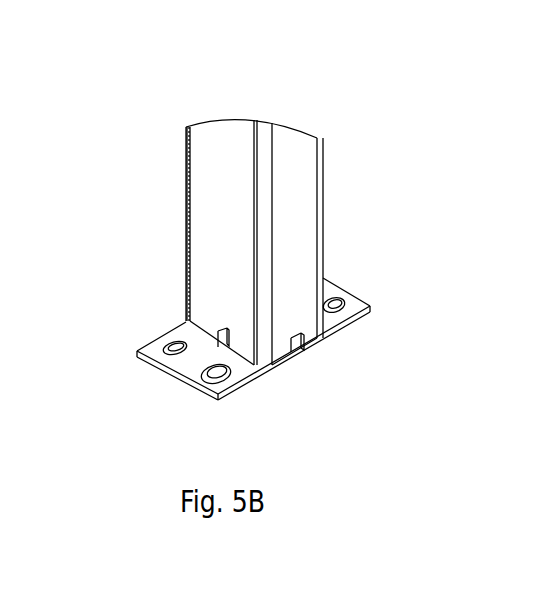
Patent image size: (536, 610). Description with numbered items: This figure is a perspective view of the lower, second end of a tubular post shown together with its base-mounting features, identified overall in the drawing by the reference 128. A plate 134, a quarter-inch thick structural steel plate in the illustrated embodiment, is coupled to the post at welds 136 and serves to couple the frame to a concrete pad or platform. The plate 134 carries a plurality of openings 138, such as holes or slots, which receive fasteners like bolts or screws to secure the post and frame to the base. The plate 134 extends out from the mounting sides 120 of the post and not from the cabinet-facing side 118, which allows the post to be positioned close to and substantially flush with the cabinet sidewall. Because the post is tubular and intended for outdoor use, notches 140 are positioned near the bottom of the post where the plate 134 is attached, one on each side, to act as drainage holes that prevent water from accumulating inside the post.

The base assembly 128 is at (153, 92).
The cabinet-facing side 118 is at (298, 207).
The mounting sides 120 is at (220, 157).
The plate 134 is at (160, 315).
The welds 136 is at (237, 355).
The openings 138 is at (225, 375).
The notches 140 is at (303, 345).